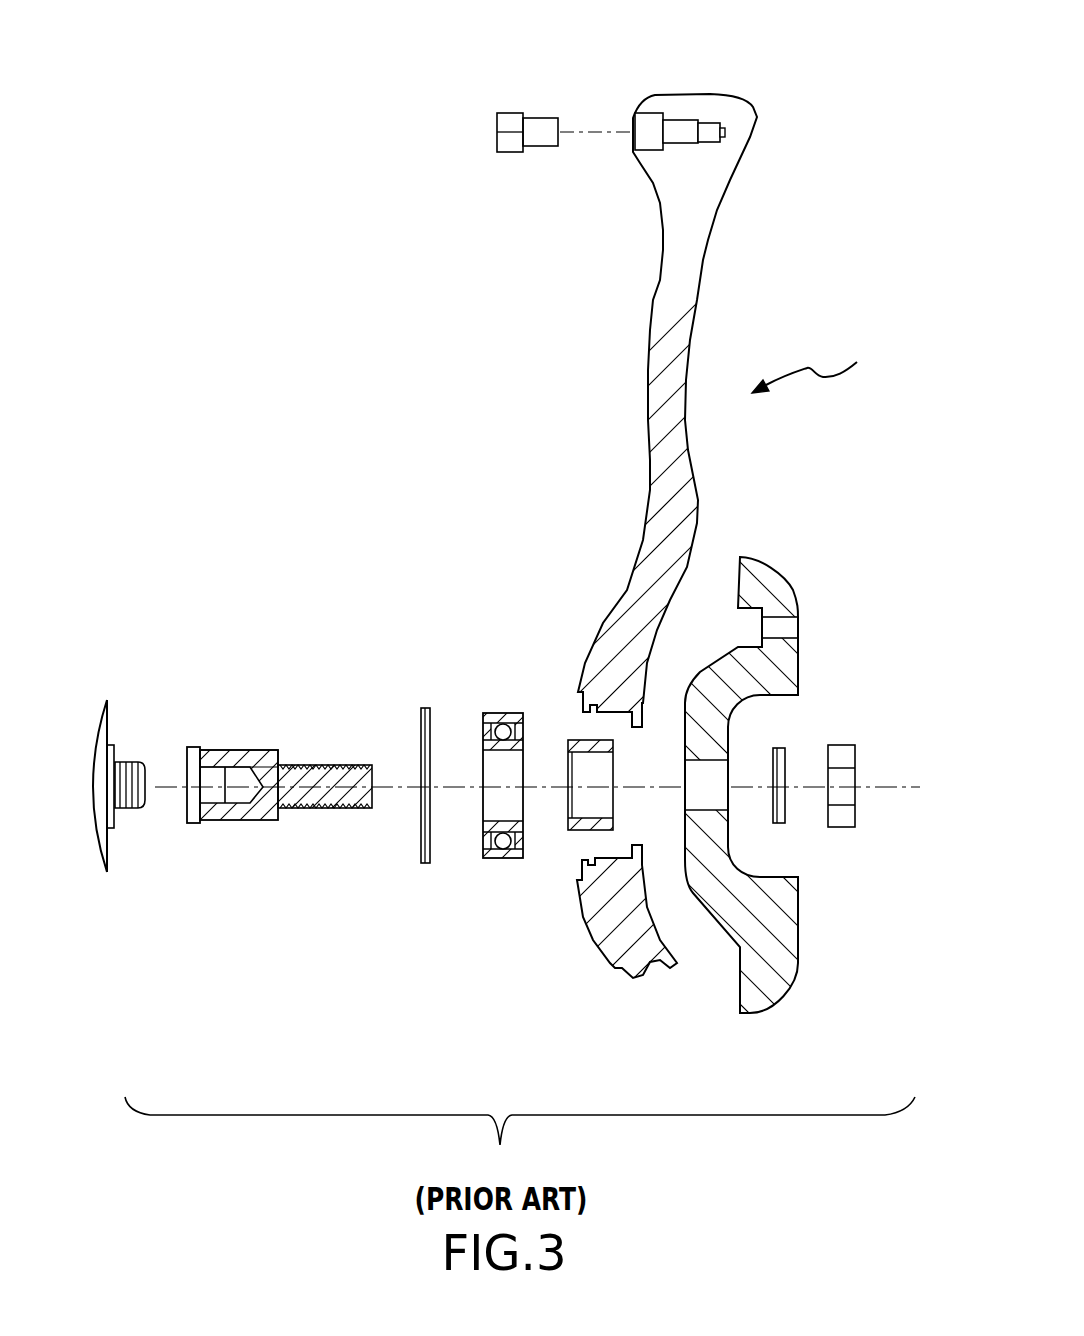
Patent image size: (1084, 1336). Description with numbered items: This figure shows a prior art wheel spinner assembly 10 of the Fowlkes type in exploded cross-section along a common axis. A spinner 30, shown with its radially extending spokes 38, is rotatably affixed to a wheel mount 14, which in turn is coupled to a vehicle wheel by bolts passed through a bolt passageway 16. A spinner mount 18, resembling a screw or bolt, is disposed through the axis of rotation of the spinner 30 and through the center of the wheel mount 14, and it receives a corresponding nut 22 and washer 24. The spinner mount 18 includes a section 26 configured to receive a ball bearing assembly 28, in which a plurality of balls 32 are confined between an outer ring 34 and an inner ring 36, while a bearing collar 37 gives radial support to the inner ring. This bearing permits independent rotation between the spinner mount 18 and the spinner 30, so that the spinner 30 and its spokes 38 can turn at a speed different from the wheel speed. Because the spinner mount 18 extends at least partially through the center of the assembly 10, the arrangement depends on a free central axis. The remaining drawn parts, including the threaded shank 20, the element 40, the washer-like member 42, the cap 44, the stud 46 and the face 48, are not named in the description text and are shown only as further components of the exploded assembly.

The spinner assembly 10 is at (573, 343).
The wheel mount 14 is at (542, 668).
The bolt passageway 16 is at (787, 628).
The spinner mount 18 is at (542, 668).
The bolt 20 is at (327, 765).
The nut 22 is at (842, 745).
The washer 24 is at (780, 825).
The section 26 is at (237, 747).
The ball bearing assembly 28 is at (542, 668).
The spinner 30 is at (823, 364).
The balls 32 is at (502, 843).
The outer ring 34 is at (495, 712).
The inner ring 36 is at (523, 832).
The bearing collar 37 is at (568, 738).
The spokes 38 is at (713, 233).
The pedal bolt 40 is at (508, 112).
The washer 42 is at (423, 857).
The cap 44 is at (140, 739).
The threaded stud 46 is at (130, 770).
The nut face 48 is at (187, 800).